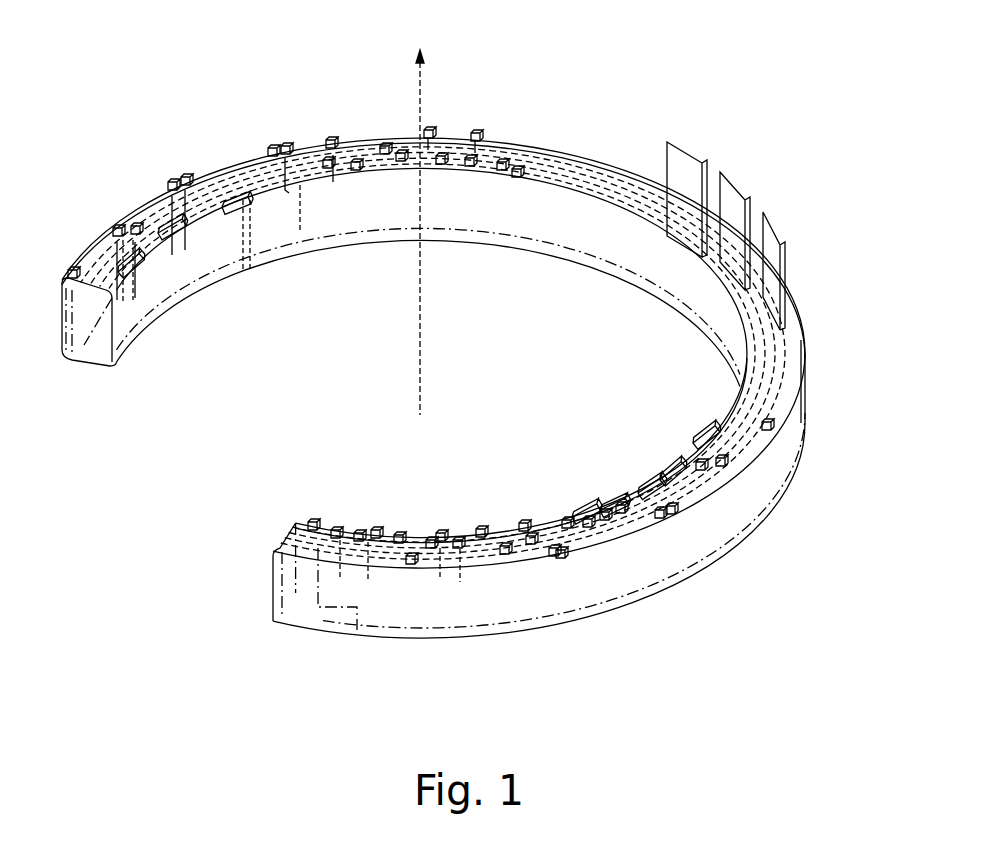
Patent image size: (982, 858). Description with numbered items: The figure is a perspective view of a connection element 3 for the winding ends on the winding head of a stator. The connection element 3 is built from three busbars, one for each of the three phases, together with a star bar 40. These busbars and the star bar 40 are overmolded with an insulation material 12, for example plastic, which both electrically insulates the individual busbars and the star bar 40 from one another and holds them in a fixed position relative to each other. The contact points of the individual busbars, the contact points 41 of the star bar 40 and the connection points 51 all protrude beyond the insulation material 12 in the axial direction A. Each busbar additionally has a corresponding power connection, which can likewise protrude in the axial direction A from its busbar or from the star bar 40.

The connection element 3 is at (583, 127).
The insulation material 12 is at (295, 613).
The star bar 40 is at (762, 483).
The contact point 41 is at (73, 268).
The connection point 51 is at (240, 197).
The axial direction A is at (424, 95).